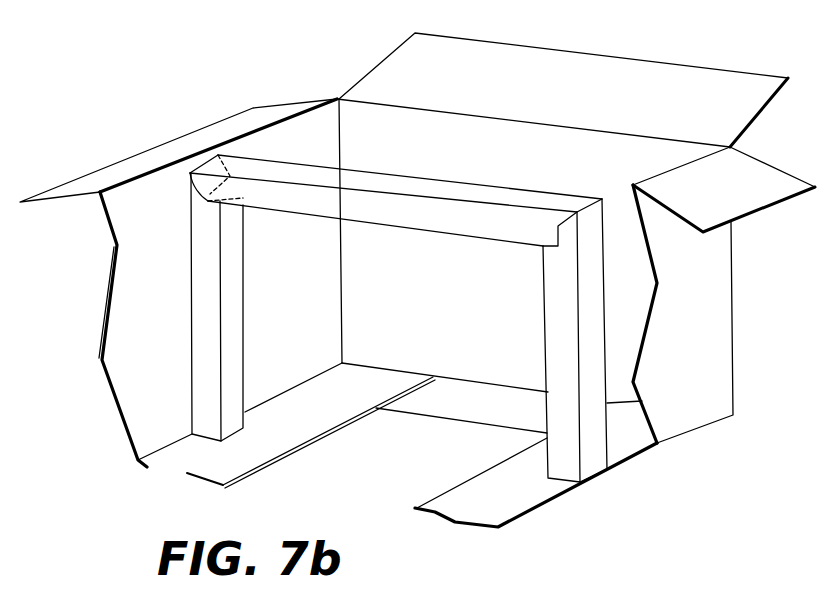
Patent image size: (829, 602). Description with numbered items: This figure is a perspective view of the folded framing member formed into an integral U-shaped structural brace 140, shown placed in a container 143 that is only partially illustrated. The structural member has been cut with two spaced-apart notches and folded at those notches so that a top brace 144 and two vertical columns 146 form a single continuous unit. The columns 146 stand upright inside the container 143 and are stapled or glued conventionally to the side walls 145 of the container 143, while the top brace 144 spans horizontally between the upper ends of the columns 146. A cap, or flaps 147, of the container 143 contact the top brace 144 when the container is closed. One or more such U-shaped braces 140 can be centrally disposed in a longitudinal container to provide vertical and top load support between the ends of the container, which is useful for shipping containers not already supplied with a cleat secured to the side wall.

The U-shaped structural brace 140 is at (298, 166).
The container 143 is at (340, 87).
The top brace 144 is at (438, 230).
The side walls 145 is at (162, 322).
The vertical columns 146 is at (235, 325).
The flaps 147 is at (511, 99).